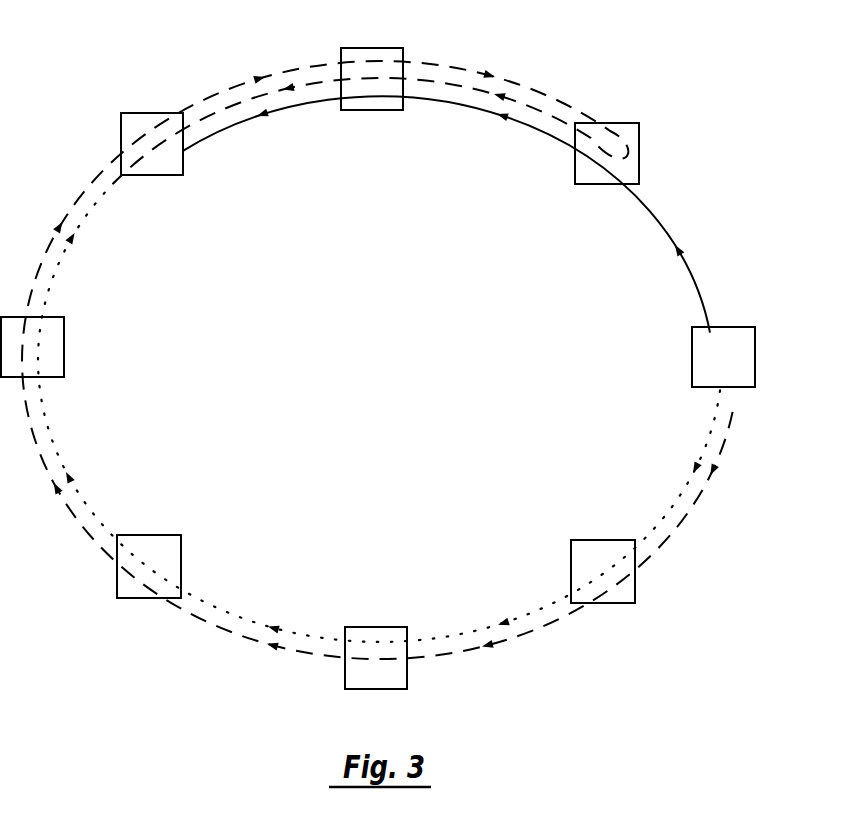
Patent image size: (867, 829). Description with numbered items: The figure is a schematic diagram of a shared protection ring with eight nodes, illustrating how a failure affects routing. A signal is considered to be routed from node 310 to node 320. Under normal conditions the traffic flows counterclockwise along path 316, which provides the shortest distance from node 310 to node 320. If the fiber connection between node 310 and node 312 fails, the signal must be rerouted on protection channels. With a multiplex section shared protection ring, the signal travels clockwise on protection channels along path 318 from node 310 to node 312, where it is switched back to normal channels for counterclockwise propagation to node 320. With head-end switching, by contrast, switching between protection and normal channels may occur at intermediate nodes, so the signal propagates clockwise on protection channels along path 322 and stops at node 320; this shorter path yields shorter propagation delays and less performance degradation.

The node 310 is at (692, 348).
The node 312 is at (640, 141).
The path 316 is at (658, 222).
The path 318 is at (277, 72).
The node 320 is at (128, 113).
The path 322 is at (220, 612).